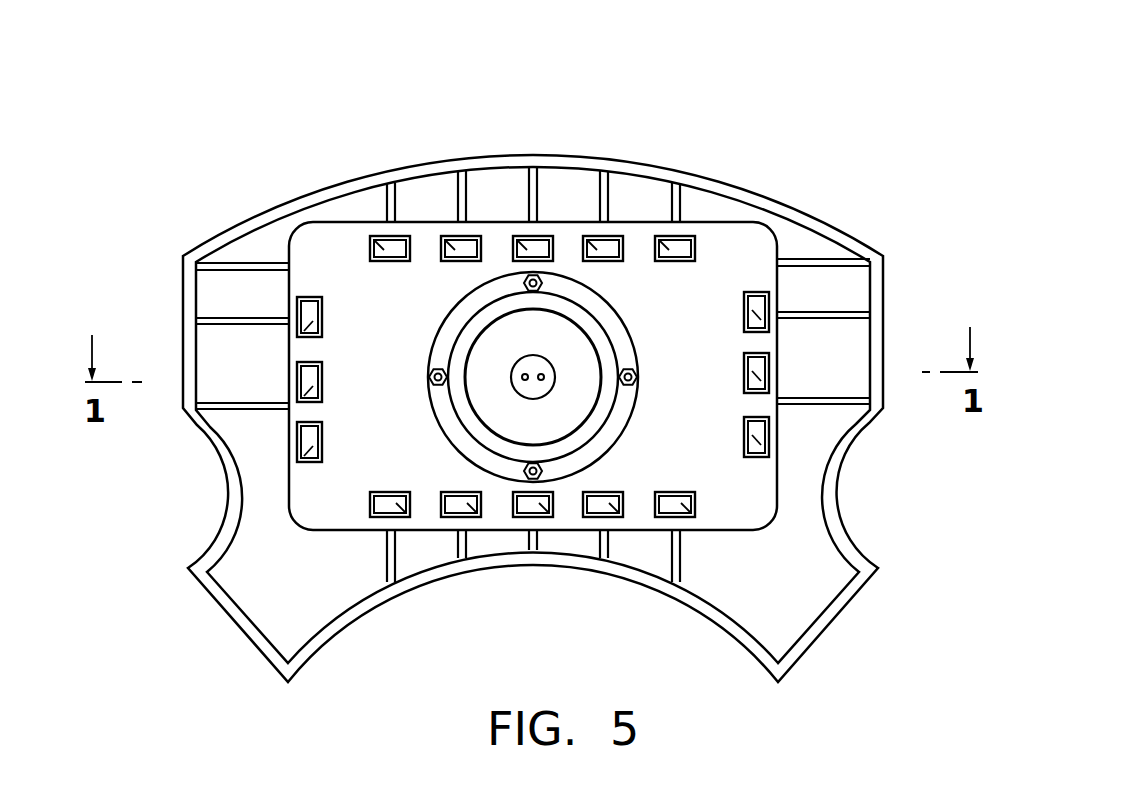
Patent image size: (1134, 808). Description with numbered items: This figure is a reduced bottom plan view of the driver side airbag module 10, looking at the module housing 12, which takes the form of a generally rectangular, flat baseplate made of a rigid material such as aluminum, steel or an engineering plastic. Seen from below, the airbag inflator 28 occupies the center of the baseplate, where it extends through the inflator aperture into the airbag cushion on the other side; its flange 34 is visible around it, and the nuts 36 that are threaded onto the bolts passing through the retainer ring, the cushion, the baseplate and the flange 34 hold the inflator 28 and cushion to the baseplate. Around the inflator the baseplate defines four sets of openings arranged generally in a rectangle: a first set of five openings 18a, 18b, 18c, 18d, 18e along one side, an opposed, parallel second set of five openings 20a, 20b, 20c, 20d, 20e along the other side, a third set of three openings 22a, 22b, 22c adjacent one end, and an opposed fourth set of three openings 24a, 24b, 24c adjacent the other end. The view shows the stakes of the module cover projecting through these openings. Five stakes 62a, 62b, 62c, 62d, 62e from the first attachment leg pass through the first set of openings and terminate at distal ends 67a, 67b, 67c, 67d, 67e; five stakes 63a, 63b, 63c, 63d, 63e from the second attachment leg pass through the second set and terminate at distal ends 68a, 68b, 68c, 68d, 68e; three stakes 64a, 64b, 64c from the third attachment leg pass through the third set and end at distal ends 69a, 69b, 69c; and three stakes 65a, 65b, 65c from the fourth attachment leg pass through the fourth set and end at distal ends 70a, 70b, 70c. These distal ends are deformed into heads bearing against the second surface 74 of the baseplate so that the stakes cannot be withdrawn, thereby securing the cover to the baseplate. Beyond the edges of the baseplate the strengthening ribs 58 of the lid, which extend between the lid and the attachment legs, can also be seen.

The driver side airbag module 10 is at (723, 67).
The module housing 12 is at (738, 532).
The opening of first set of openings 18a is at (387, 262).
The opening of first set of openings 18b is at (456, 262).
The opening of first set of openings 18c is at (545, 262).
The opening of first set of openings 18d is at (625, 250).
The opening of first set of openings 18e is at (695, 248).
The opening of second set of openings 20a is at (374, 500).
The opening of second set of openings 20b is at (443, 503).
The opening of second set of openings 20c is at (514, 493).
The opening of second set of openings 20d is at (605, 491).
The opening of second set of openings 20e is at (679, 491).
The opening of third set of openings 22a is at (300, 298).
The opening of third set of openings 22b is at (310, 363).
The opening of third set of openings 22c is at (306, 424).
The opening of fourth set of openings 24a is at (742, 313).
The opening of fourth set of openings 24b is at (742, 376).
The opening of fourth set of openings 24c is at (742, 432).
The airbag inflator 28 is at (580, 340).
The flange of the inflator 34 is at (442, 337).
The nuts 36 is at (530, 296).
The strengthening ribs 58 is at (225, 262).
The stake 62a is at (385, 237).
The stake 62b is at (470, 237).
The stake 62c is at (542, 236).
The stake 62d is at (614, 236).
The stake 62e is at (681, 234).
The stake 63a is at (372, 519).
The stake 63b is at (441, 519).
The stake 63c is at (511, 519).
The stake 63d is at (582, 519).
The stake 63e is at (651, 519).
The stake 64a is at (298, 310).
The stake 64b is at (298, 375).
The stake 64c is at (298, 437).
The stake 65a is at (758, 293).
The stake 65b is at (768, 372).
The stake 65c is at (760, 458).
The distal end of stake 67a is at (370, 240).
The distal end of stake 67b is at (445, 238).
The distal end of stake 67c is at (515, 236).
The distal end of stake 67d is at (587, 236).
The distal end of stake 67e is at (661, 234).
The distal end of stake 68a is at (395, 518).
The distal end of stake 68b is at (473, 518).
The distal end of stake 68c is at (545, 518).
The distal end of stake 68d is at (612, 518).
The distal end of stake 68e is at (697, 518).
The distal end of stake 69a is at (297, 326).
The distal end of stake 69b is at (297, 386).
The distal end of stake 69c is at (304, 446).
The distal end of stake 70a is at (762, 318).
The distal end of stake 70b is at (760, 380).
The distal end of stake 70c is at (760, 430).
The second surface of the baseplate 74 is at (760, 238).